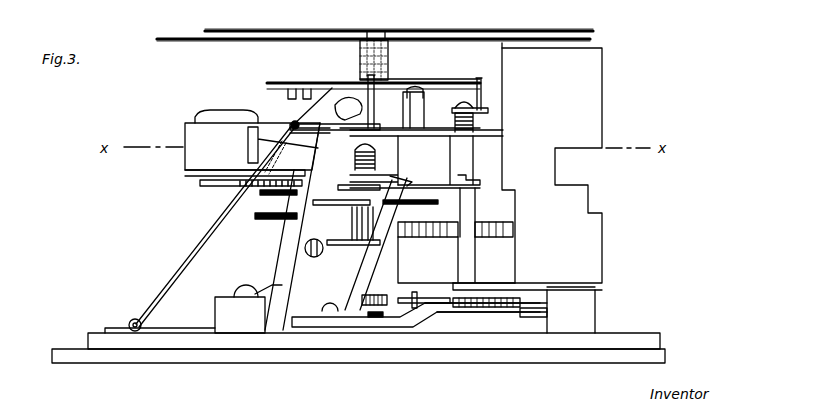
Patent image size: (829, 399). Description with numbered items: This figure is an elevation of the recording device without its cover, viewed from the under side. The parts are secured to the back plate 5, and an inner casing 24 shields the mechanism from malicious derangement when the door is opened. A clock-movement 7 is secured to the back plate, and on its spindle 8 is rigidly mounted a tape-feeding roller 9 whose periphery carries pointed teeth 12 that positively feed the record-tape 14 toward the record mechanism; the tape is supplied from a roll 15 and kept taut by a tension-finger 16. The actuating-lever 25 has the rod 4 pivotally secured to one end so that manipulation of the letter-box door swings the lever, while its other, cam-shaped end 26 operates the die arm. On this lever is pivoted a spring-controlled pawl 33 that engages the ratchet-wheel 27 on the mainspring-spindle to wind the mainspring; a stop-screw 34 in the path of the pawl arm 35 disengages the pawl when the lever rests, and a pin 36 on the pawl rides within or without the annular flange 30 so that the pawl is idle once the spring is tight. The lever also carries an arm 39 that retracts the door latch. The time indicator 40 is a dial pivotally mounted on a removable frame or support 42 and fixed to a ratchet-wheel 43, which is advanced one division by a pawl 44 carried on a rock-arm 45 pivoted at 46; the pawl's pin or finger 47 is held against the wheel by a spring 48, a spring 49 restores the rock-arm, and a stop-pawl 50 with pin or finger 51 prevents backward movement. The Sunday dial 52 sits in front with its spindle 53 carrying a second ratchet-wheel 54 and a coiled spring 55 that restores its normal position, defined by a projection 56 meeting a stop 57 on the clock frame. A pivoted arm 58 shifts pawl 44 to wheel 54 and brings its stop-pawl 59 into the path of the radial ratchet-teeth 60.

The indicator 40 is at (199, 33).
The second dial 52 is at (311, 33).
The spindle 53 is at (383, 25).
The coiled spring 55 is at (396, 55).
The inner casing 24 is at (527, 166).
The ratchet-wheel 43 is at (320, 80).
The second ratchet-wheel 54 is at (458, 81).
The ratchet-teeth 60 is at (287, 92).
The pin or finger 51 is at (483, 88).
The stop-pawl 50 is at (489, 110).
The pivoted arm 58 is at (481, 131).
The projection 56 is at (425, 95).
The stop 57 is at (417, 112).
The pin or finger 47 is at (375, 99).
The stop-pawl 59 is at (347, 113).
The spring 48 is at (292, 124).
The record-tape 14 is at (185, 131).
The roll 15 is at (224, 109).
The tension-finger 16 is at (248, 152).
The frame or support 42 is at (198, 251).
The pawl 44 is at (348, 131).
The rock-arm 45 is at (271, 228).
The pivot 46 is at (305, 243).
The spring 49 is at (251, 188).
The pointed teeth 12 is at (370, 150).
The tape-feeding roller 9 is at (374, 160).
The spindle 8 is at (372, 195).
The clock-movement 7 is at (414, 209).
The arm 39 is at (395, 244).
The pin 36 is at (411, 292).
The stop-screw 34 is at (380, 292).
The pawl 33 is at (424, 291).
The arm 35 is at (365, 308).
The rod 4 is at (360, 313).
The actuating-lever 25 is at (433, 317).
The ratchet-wheel 27 is at (491, 310).
The cam-shaped end 26 is at (527, 313).
The annular flange 30 is at (540, 292).
The back plate 5 is at (235, 352).